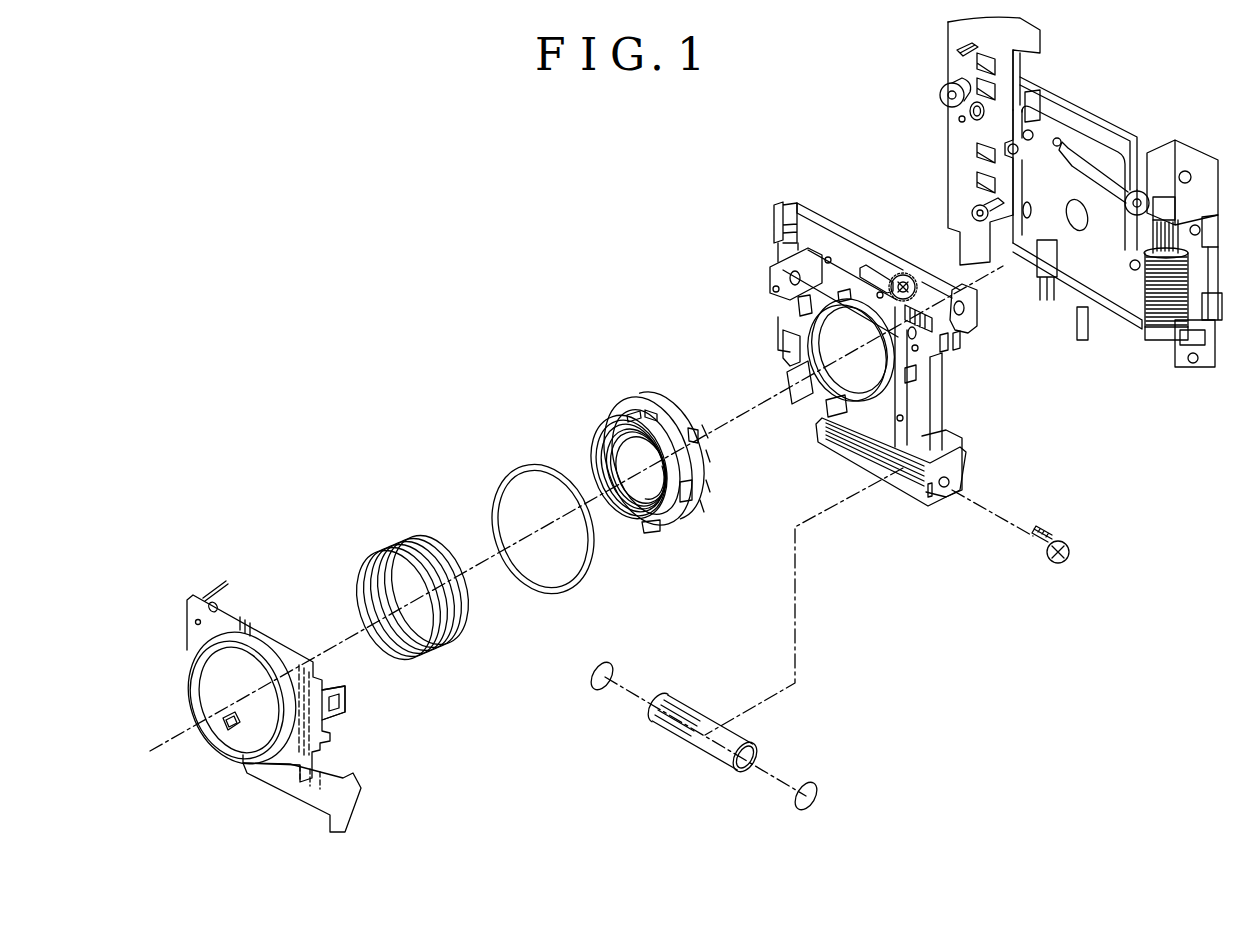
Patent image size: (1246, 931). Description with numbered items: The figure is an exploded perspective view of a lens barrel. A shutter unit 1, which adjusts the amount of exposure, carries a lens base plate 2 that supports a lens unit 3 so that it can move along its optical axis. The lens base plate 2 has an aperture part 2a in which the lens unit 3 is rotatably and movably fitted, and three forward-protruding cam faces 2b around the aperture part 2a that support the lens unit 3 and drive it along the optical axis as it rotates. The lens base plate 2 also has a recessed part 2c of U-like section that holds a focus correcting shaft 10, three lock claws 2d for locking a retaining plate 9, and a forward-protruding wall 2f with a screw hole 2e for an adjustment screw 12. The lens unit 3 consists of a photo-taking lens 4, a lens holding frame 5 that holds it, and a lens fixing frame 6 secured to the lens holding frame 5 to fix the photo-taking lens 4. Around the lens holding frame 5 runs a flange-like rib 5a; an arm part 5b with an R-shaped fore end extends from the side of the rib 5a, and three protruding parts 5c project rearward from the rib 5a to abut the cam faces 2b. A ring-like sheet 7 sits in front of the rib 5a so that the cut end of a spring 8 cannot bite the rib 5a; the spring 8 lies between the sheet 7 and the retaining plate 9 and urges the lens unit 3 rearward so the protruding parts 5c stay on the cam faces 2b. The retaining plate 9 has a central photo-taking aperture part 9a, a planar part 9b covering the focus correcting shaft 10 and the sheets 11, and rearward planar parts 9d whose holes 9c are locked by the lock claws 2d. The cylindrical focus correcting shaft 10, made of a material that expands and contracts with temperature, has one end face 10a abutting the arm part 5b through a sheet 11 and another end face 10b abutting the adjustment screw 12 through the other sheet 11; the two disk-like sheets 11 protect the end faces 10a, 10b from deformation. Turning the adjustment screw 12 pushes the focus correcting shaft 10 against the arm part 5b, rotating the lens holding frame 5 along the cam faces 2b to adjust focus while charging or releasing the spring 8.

The shutter unit 1 is at (955, 64).
The lens base plate 2 is at (872, 353).
The aperture part 2a is at (792, 347).
The cam faces 2b is at (843, 292).
The recessed part 2c is at (845, 440).
The lock claws 2d is at (785, 262).
The screw hole 2e is at (950, 480).
The wall 2f is at (944, 495).
The lens unit 3 is at (641, 432).
The photo-taking lens 4 is at (628, 466).
The lens holding frame 5 is at (658, 468).
The rib 5a is at (692, 504).
The arm part 5b is at (651, 527).
The protruding parts 5c is at (698, 432).
The lens fixing frame 6 is at (622, 418).
The sheet 7 is at (503, 468).
The spring 8 is at (389, 552).
The retaining plate 9 is at (281, 675).
The photo-taking aperture part 9a is at (198, 680).
The planar part 9b is at (275, 783).
The holes 9c is at (206, 592).
The planar parts 9d is at (224, 583).
The focus correcting shaft 10 is at (673, 743).
The end face 10a is at (656, 712).
The end face 10b is at (746, 766).
The sheets 11 is at (612, 680).
The adjustment screw 12 is at (1048, 543).